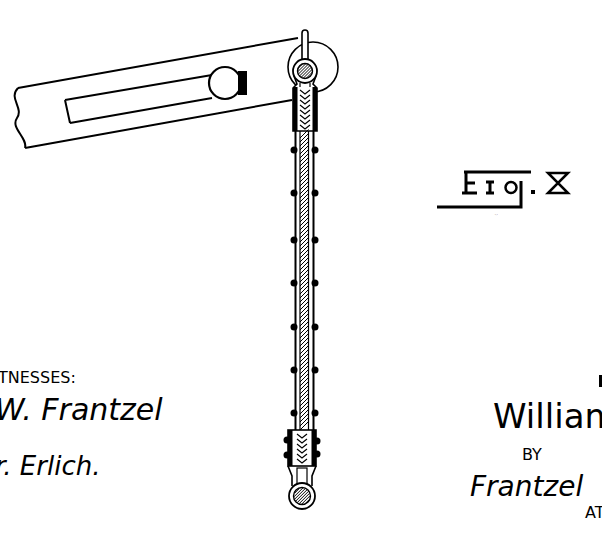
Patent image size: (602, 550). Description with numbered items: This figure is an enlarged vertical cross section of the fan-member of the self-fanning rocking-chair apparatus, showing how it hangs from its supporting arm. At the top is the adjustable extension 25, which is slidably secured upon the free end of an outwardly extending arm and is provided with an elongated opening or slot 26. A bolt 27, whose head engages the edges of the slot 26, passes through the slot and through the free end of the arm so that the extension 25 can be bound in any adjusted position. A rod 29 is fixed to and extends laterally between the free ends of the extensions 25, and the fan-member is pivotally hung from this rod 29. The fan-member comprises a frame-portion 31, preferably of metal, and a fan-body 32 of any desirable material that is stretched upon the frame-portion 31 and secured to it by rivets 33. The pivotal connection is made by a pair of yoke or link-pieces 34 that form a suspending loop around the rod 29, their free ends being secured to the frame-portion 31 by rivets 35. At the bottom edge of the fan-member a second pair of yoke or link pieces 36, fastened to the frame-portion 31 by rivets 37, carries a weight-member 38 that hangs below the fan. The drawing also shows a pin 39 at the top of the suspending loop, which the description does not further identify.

The bar 25 is at (160, 70).
The slot in bar 26 is at (130, 100).
The hole 27 is at (227, 82).
The rounded end of bar 29 is at (327, 48).
The rod 31 is at (295, 128).
The rod core 32 is at (303, 265).
The projections 33 is at (316, 193).
The clevis arms 34 is at (291, 85).
The sleeve 35 is at (317, 110).
The lower sleeve 36 is at (288, 443).
The lower projections 37 is at (288, 437).
The eye 38 is at (316, 497).
The pin 39 is at (308, 47).